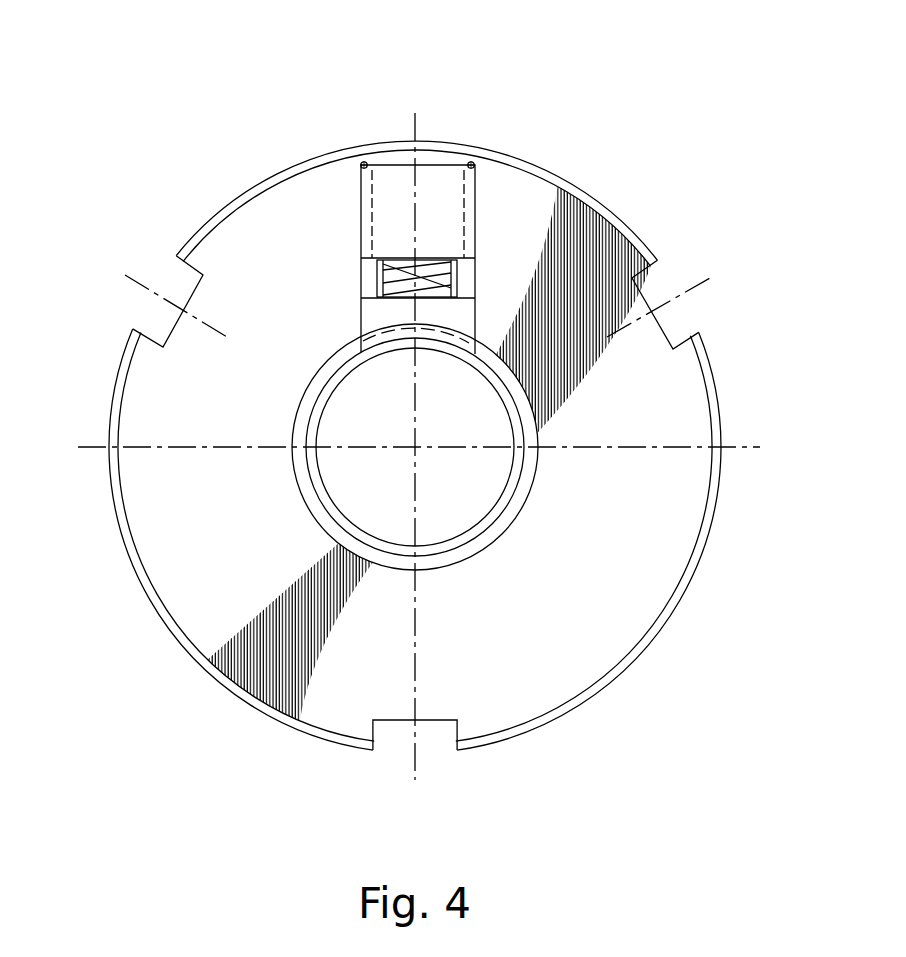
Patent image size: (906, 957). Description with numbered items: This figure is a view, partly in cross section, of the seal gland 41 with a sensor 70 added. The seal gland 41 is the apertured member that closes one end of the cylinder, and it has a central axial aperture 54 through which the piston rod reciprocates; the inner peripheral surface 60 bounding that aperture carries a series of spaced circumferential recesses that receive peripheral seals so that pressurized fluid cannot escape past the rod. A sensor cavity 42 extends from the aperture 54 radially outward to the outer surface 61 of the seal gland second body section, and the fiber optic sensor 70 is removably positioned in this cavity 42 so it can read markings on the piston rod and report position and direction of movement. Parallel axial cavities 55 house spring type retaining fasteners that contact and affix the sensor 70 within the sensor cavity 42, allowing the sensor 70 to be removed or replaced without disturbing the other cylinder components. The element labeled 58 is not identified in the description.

The seal gland 41 is at (110, 468).
The sensor cavity 42 is at (463, 275).
The central axial aperture 54 is at (357, 483).
The parallel axial cavities 55 is at (366, 160).
The left notch 58 is at (237, 258).
The inner peripheral surface 60 is at (503, 512).
The outer surface 61 is at (715, 383).
The sensor 70 is at (430, 187).